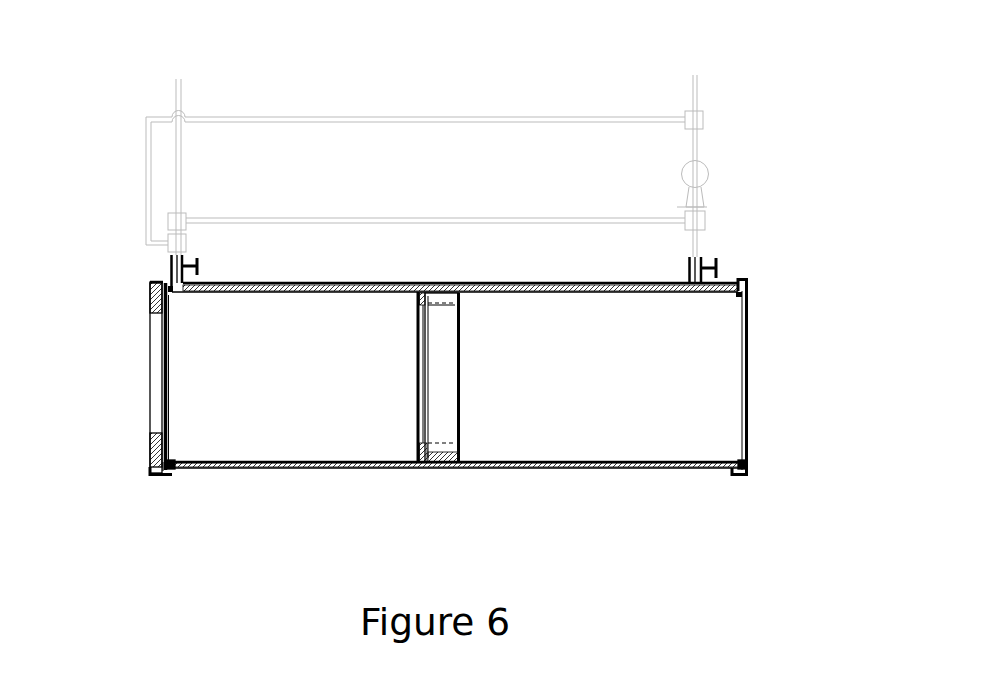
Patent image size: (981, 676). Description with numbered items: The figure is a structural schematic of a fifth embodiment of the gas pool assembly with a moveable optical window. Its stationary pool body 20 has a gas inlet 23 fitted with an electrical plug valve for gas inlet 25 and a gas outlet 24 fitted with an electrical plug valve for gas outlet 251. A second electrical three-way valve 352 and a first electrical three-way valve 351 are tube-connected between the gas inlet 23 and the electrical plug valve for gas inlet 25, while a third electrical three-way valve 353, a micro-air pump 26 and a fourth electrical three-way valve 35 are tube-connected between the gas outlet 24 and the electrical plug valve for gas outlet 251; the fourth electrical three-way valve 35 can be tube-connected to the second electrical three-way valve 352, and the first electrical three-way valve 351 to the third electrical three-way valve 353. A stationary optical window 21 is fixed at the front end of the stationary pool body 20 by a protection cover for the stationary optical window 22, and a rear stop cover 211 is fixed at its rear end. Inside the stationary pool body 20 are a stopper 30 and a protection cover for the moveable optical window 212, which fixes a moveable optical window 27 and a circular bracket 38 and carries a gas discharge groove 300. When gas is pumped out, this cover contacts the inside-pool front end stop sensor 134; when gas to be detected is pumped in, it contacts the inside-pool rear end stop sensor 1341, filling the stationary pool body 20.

The stationary pool body 20 is at (213, 442).
The stationary optical window 21 is at (158, 475).
The protection cover for the stationary optical window 22 is at (160, 395).
The gas inlet 23 is at (176, 79).
The gas outlet 24 is at (695, 75).
The electrical plug valve for gas inlet 25 is at (170, 270).
The micro-air pump 26 is at (690, 198).
The moveable optical window 27 is at (417, 448).
The stopper 30 is at (170, 470).
The fourth electrical three-way valve 35 is at (703, 112).
The circular bracket 38 is at (459, 390).
The inside-pool front end stop sensor 134 is at (152, 317).
The rear stop cover 211 is at (835, 512).
The protection cover for the moveable optical window 212 is at (502, 514).
The electrical plug valve for gas outlet 251 is at (718, 267).
The gas discharge groove 300 is at (408, 283).
The first electrical three-way valve 351 is at (170, 214).
The second electrical three-way valve 352 is at (170, 237).
The third electrical three-way valve 353 is at (705, 229).
The inside-pool rear end stop sensor 1341 is at (835, 332).